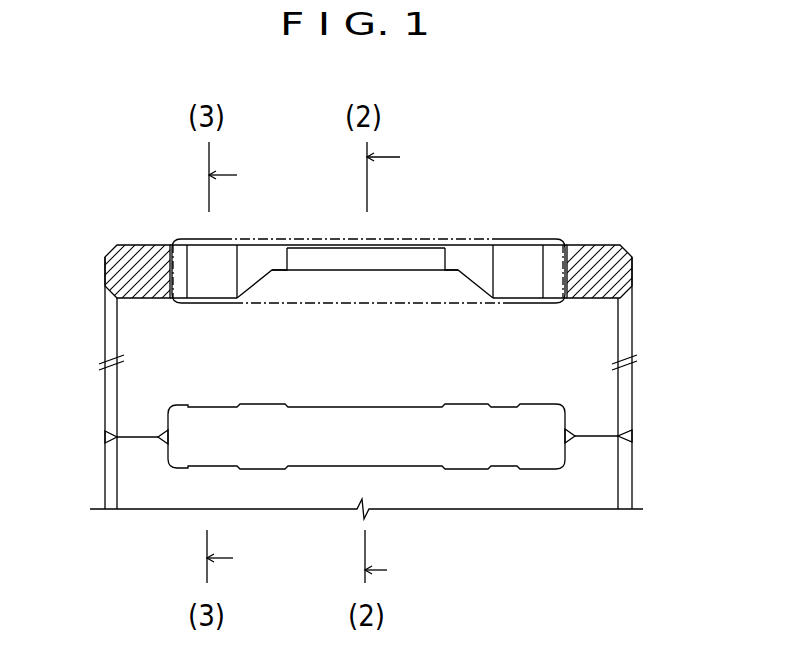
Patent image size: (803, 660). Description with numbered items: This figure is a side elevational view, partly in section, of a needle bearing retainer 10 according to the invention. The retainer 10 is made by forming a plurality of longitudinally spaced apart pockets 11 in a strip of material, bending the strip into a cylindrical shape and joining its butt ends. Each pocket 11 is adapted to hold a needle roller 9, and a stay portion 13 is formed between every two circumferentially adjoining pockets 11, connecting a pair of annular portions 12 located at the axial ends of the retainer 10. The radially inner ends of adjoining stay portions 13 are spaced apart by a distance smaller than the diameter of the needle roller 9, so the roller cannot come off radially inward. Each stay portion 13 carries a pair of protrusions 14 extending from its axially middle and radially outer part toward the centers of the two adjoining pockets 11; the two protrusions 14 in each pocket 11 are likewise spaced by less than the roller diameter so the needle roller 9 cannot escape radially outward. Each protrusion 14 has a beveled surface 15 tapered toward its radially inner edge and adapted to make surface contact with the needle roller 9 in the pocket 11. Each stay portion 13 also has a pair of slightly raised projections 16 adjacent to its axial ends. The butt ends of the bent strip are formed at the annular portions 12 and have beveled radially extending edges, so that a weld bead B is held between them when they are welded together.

The needle roller 9 is at (312, 241).
The retainer 10 is at (600, 216).
The pocket 11 is at (198, 427).
The annular portion 12 is at (108, 275).
The stay portion 13 is at (468, 243).
The protrusion 14 is at (408, 244).
The beveled surface 15 is at (400, 263).
The projection 16 is at (203, 256).
The weld bead B is at (158, 436).